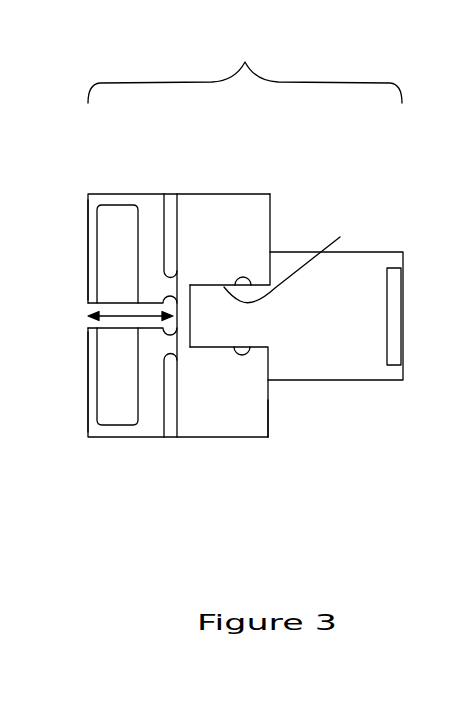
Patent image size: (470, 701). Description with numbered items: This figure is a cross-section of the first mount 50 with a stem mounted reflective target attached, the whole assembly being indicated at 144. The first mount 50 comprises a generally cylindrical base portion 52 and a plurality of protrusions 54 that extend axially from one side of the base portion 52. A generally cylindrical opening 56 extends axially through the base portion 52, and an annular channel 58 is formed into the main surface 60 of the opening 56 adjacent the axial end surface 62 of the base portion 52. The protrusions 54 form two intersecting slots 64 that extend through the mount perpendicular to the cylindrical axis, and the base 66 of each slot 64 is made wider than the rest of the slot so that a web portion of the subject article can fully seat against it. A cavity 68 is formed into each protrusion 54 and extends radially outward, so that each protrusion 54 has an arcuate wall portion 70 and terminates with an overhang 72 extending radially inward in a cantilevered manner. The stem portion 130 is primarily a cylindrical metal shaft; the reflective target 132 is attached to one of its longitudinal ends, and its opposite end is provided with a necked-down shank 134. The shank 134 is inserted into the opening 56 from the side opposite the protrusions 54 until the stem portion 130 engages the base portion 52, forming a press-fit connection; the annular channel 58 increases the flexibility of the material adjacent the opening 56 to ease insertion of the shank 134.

The mating assembly 144 is at (245, 67).
The first mount 50 is at (218, 194).
The base portion 52 is at (207, 423).
The protrusions 54 is at (128, 213).
The cylindrical opening 56 is at (184, 322).
The annular channel 58 is at (245, 277).
The main surface 60 is at (296, 263).
The axial end surface 62 is at (270, 408).
The slots 64 is at (129, 318).
The base of slot 66 is at (173, 232).
The cavity 68 is at (118, 260).
The arcuate wall portion 70 is at (102, 199).
The overhang 72 is at (90, 259).
The stem portion 130 is at (353, 352).
The reflective target 132 is at (397, 295).
The shank 134 is at (228, 327).